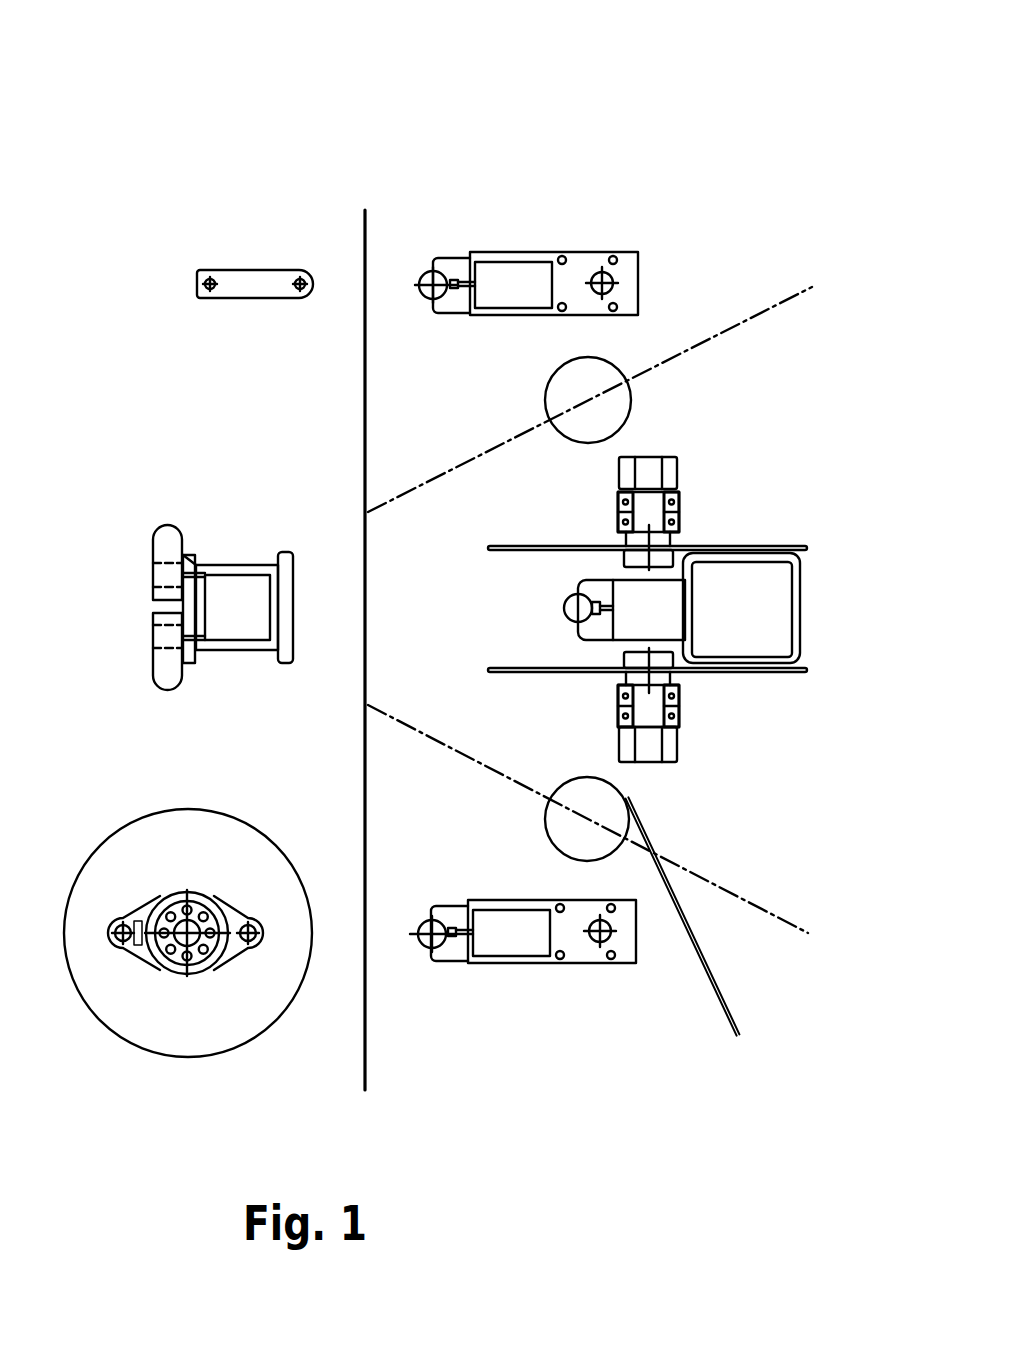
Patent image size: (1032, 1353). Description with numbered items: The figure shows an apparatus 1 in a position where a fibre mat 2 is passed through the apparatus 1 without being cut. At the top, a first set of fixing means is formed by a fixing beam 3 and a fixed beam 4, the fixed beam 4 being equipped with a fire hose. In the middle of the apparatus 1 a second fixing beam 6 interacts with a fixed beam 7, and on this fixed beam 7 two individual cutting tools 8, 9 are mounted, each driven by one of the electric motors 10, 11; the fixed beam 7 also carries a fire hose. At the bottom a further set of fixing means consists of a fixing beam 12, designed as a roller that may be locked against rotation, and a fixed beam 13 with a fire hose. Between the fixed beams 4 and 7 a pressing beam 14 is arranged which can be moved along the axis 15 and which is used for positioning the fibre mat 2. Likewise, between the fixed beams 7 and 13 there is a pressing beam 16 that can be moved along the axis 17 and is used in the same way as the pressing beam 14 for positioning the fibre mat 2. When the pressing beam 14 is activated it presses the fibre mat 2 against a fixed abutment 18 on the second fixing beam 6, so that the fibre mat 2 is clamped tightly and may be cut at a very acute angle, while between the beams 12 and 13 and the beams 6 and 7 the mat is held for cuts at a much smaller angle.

The apparatus 1 is at (200, 90).
The fibre mat 2 is at (367, 238).
The fixing beam 3 is at (248, 287).
The fixed beam 4 is at (462, 303).
The second fixing beam 6 is at (225, 570).
The fixed beam 7 is at (598, 630).
The cutting tool 8 is at (502, 548).
The cutting tool 9 is at (522, 674).
The electric motor 10 is at (672, 470).
The electric motor 11 is at (670, 757).
The fixing beam 12 is at (223, 865).
The fixed beam 13 is at (463, 958).
The pressing beam 14 is at (612, 375).
The axis 15 is at (758, 315).
The pressing beam 16 is at (552, 820).
The axis 17 is at (745, 900).
The fixed abutment 18 is at (168, 540).